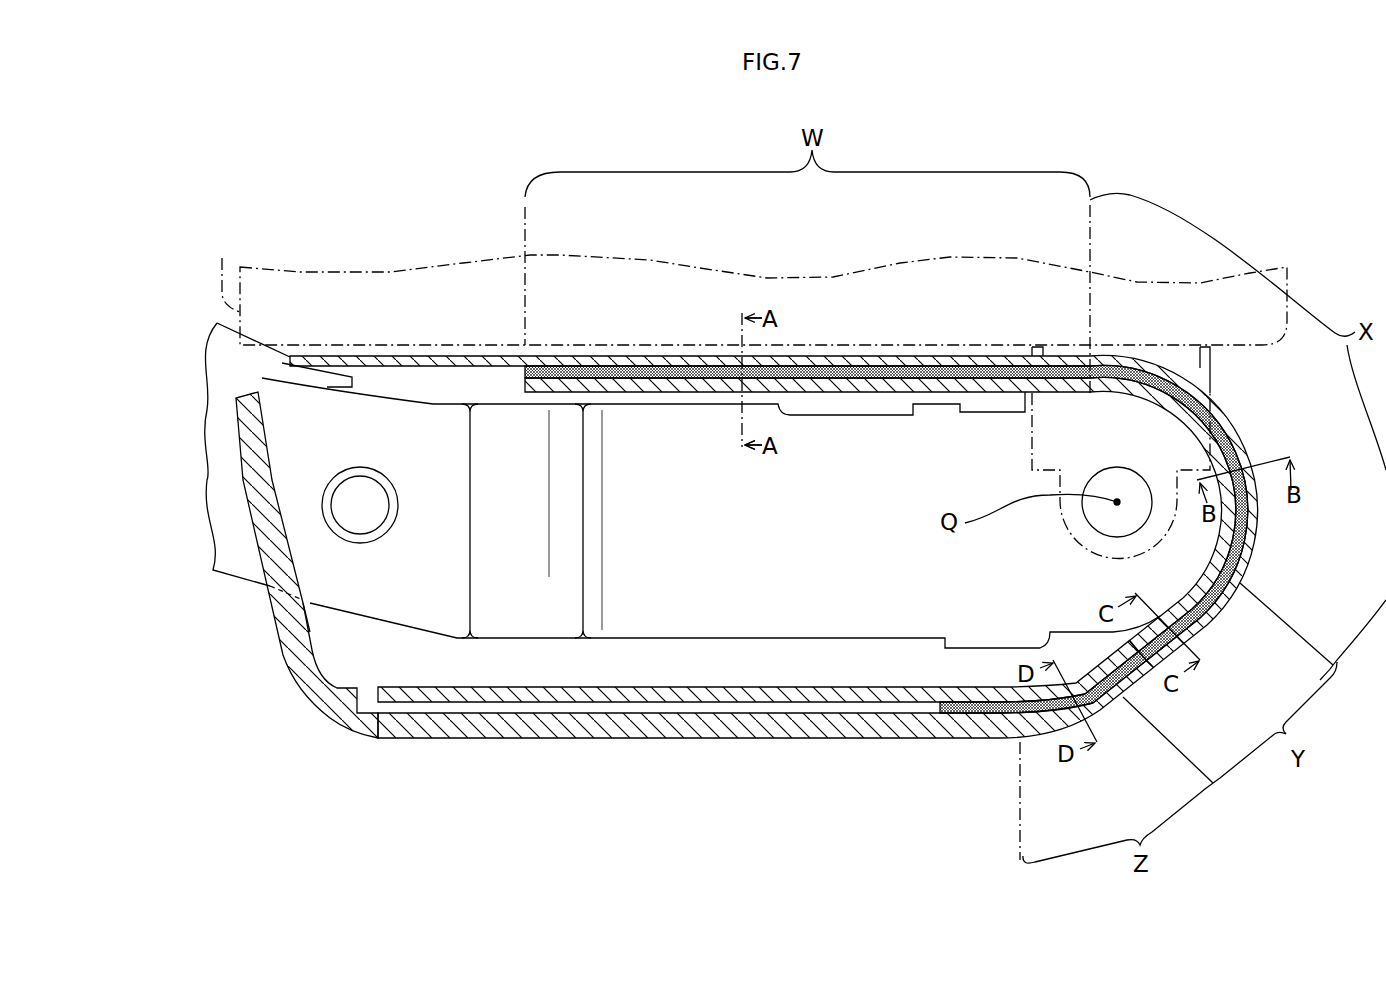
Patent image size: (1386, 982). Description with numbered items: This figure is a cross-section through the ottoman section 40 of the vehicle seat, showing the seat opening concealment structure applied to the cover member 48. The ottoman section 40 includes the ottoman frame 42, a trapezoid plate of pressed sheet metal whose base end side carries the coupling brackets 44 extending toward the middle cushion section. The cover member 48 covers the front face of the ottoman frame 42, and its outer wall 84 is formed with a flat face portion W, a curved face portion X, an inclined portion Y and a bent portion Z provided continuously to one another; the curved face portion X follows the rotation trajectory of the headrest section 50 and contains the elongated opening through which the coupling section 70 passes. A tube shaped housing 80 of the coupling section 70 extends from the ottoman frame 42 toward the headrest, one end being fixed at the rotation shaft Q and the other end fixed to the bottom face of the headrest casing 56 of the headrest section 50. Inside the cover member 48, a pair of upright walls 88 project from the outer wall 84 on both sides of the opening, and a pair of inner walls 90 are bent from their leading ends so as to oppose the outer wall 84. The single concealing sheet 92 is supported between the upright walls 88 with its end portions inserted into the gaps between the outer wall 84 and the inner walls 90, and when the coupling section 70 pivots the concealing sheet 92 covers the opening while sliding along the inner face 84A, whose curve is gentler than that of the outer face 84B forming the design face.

The ottoman section 40 is at (260, 636).
The ottoman frame 42 is at (750, 522).
The coupling brackets 44 is at (216, 497).
The cover member 48 is at (274, 698).
The headrest section 50 is at (302, 270).
The headrest casing 56 is at (222, 258).
The coupling section 70 is at (1066, 551).
The housing 80 is at (1030, 447).
The outer wall 84 is at (487, 354).
The inner face 84A is at (435, 368).
The outer face 84B is at (400, 355).
The upright walls 88 is at (403, 740).
The inner walls 90 is at (530, 686).
The concealing sheet 92 is at (970, 715).